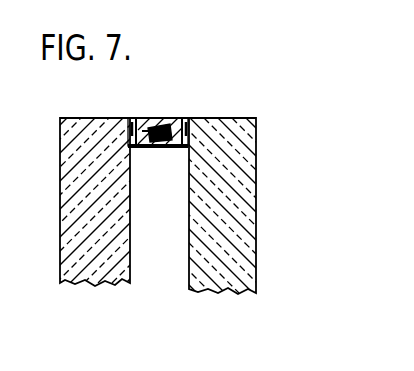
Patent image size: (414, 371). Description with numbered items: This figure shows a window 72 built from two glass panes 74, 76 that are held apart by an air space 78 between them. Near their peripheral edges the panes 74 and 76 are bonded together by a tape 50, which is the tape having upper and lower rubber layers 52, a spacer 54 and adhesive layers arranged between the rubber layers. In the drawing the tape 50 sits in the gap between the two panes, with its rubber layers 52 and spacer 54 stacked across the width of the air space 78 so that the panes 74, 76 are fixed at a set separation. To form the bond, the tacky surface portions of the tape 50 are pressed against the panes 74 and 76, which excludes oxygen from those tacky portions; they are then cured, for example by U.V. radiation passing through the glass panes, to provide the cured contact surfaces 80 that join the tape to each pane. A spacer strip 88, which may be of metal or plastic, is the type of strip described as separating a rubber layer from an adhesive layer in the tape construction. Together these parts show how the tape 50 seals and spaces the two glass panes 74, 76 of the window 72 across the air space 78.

The tape 50 is at (162, 108).
The rubber layers 52 is at (152, 149).
The spacer 54 is at (175, 117).
The window 72 is at (260, 200).
The glass pane 74 is at (252, 247).
The glass pane 76 is at (78, 193).
The air space 78 is at (149, 267).
The cured contact surfaces 80 is at (131, 117).
The spacer strip 88 is at (164, 149).